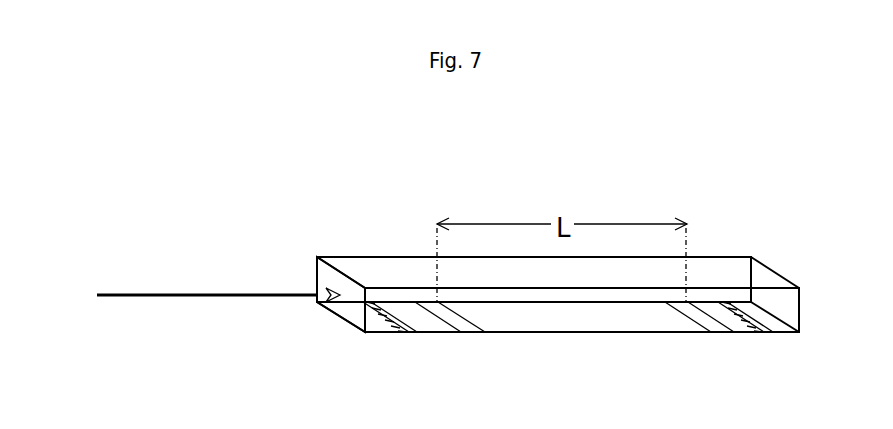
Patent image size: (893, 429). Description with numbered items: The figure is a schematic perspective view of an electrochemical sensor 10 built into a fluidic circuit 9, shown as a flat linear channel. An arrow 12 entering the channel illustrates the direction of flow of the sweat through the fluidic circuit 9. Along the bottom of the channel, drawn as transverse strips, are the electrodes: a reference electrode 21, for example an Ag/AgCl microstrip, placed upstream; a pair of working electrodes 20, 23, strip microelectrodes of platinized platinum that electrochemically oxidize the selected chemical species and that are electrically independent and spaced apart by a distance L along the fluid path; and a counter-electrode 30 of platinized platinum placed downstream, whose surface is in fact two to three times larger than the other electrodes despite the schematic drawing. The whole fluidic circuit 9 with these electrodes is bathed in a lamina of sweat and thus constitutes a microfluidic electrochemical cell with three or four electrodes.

The electrochemical sensor 10 is at (580, 218).
The fluidic circuit 9 is at (337, 318).
The arrow 12 is at (212, 293).
The working electrode 20 is at (472, 333).
The reference electrode 21 is at (420, 333).
The working electrode 23 is at (727, 333).
The counter-electrode 30 is at (777, 331).